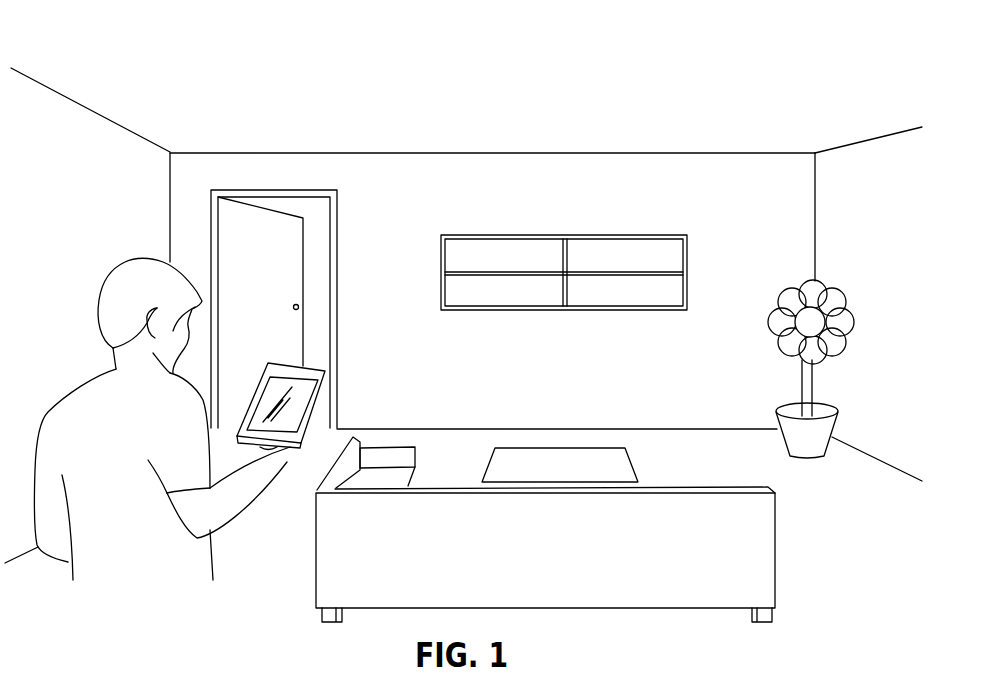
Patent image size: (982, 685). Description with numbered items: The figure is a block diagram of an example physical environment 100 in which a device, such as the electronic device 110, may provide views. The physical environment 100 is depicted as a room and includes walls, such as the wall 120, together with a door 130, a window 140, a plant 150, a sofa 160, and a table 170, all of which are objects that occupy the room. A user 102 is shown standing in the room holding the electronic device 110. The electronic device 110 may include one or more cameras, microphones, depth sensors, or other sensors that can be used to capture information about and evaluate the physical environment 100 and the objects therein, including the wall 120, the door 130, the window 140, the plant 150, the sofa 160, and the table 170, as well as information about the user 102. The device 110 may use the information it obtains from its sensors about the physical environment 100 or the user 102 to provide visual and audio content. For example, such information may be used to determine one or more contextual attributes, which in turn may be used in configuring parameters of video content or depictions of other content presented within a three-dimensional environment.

The physical environment 100 is at (92, 57).
The user 102 is at (63, 415).
The electronic device 110 is at (292, 443).
The wall 120 is at (712, 175).
The door 130 is at (240, 222).
The window 140 is at (477, 257).
The plant 150 is at (853, 320).
The sofa 160 is at (775, 540).
The table 170 is at (630, 462).